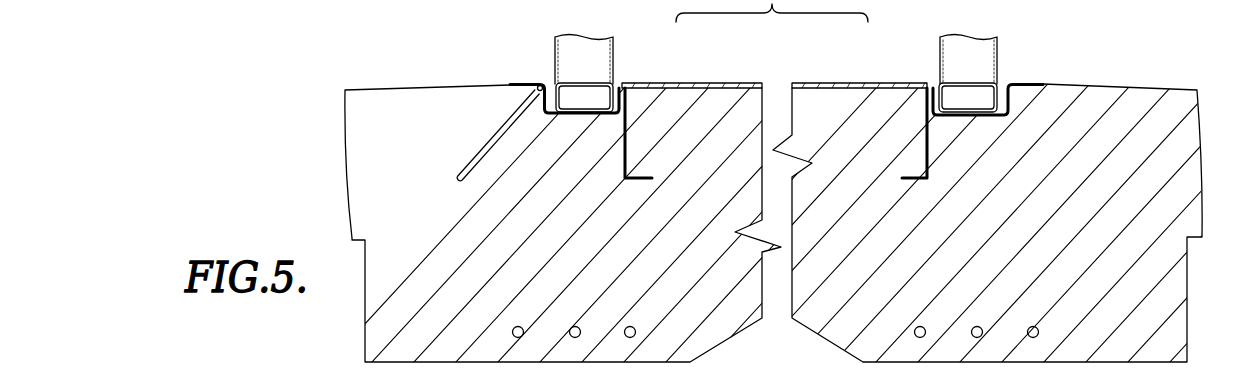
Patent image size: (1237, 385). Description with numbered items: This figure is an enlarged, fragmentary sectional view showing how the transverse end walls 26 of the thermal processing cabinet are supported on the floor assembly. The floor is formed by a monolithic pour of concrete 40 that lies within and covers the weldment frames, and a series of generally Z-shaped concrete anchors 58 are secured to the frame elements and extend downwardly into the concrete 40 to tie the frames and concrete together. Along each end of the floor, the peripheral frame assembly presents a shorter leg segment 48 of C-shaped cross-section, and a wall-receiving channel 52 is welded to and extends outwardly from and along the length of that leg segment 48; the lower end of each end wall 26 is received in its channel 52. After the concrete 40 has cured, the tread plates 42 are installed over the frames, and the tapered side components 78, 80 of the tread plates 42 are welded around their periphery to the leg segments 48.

The concrete 40 is at (338, 110).
The concrete anchor 58 is at (493, 140).
The wall-receiving channel 52 is at (523, 83).
The end wall 26 is at (597, 52).
The side component 78 is at (719, 83).
The side component 80 is at (828, 83).
The tread plate 42 is at (748, 78).
The shorter leg segment 48 is at (627, 140).